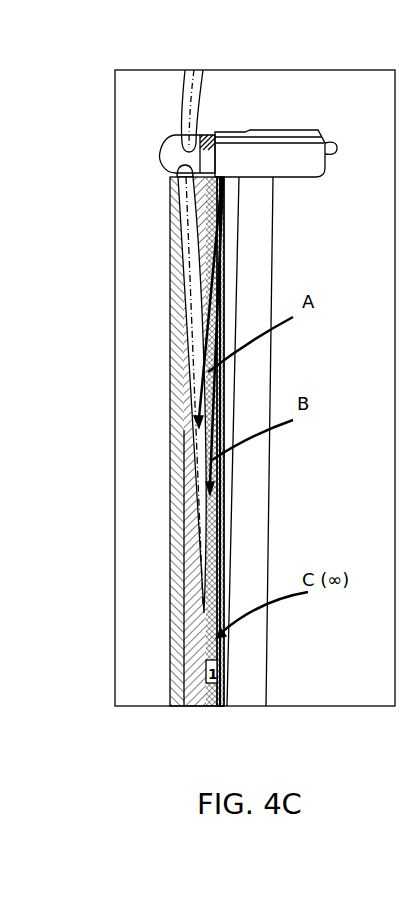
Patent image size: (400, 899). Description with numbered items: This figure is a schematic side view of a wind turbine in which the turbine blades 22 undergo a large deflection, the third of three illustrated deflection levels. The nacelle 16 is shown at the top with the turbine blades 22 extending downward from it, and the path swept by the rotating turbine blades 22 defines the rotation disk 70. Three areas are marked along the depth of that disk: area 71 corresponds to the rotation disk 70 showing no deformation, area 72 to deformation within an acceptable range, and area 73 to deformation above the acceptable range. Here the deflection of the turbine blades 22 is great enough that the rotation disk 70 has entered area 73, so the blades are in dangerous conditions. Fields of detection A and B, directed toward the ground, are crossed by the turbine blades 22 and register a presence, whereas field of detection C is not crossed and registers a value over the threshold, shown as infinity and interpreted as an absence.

The rotation disk 70 is at (197, 310).
The nacelle 16 is at (181, 441).
The turbine blades 22 is at (190, 548).
The area 71 is at (175, 683).
The area 72 is at (193, 695).
The area 73 is at (217, 695).